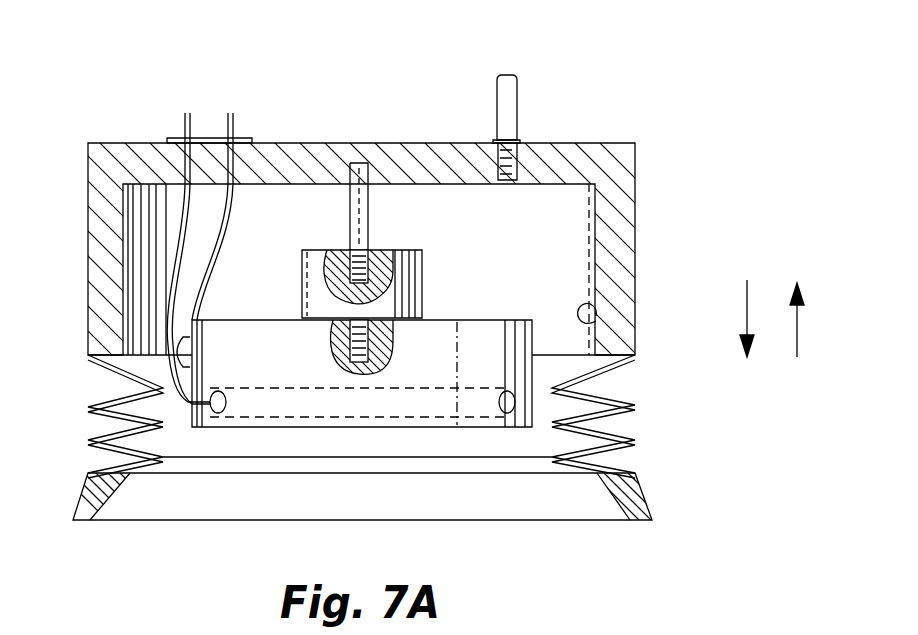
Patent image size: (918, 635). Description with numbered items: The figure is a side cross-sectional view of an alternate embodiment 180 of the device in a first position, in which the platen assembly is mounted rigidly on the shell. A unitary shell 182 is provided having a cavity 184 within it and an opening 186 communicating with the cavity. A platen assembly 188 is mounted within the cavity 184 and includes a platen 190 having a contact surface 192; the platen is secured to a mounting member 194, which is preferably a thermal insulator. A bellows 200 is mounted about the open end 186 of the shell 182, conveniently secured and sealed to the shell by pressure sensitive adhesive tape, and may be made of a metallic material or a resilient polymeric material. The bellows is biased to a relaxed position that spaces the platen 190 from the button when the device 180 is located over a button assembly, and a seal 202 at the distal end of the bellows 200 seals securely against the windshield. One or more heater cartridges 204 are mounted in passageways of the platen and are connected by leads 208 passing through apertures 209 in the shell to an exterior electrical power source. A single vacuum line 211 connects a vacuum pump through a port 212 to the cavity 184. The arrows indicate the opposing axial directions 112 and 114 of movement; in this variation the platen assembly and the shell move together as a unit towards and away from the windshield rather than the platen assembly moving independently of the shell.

The alternate embodiment 180 is at (599, 63).
The unitary shell 182 is at (622, 235).
The cavity 184 is at (514, 243).
The opening 186 is at (597, 321).
The platen assembly 188 is at (250, 316).
The platen 190 is at (432, 333).
The contact surface 192 is at (349, 430).
The mounting member 194 is at (390, 250).
The bellows 200 is at (617, 395).
The seal 202 is at (640, 494).
The heater cartridge 204 is at (212, 412).
The lead 208 is at (180, 240).
The aperture 209 is at (185, 142).
The vacuum line 211 is at (517, 92).
The port 212 is at (520, 142).
The opposing direction 114 is at (747, 310).
The opposing direction 112 is at (797, 333).